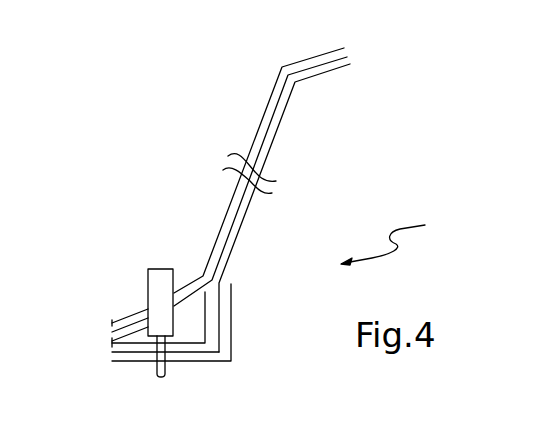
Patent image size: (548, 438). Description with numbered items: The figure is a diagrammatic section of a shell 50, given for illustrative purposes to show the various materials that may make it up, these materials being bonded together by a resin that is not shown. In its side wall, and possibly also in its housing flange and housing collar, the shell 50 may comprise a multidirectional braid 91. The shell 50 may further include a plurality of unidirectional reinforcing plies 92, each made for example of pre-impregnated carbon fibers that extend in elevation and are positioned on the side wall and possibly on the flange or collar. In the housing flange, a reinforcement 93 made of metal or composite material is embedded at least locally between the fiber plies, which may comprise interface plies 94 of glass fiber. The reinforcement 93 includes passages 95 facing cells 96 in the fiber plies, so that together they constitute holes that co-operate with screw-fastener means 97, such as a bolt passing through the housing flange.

The shell 50 is at (399, 238).
The multidirectional braid 91 is at (312, 66).
The unidirectional reinforcing plies 92 is at (302, 61).
The reinforcement 93 is at (145, 345).
The interface plies 94 is at (232, 302).
The passages 95 is at (133, 323).
The cells 96 is at (148, 300).
The screw-fastener means 97 is at (167, 368).